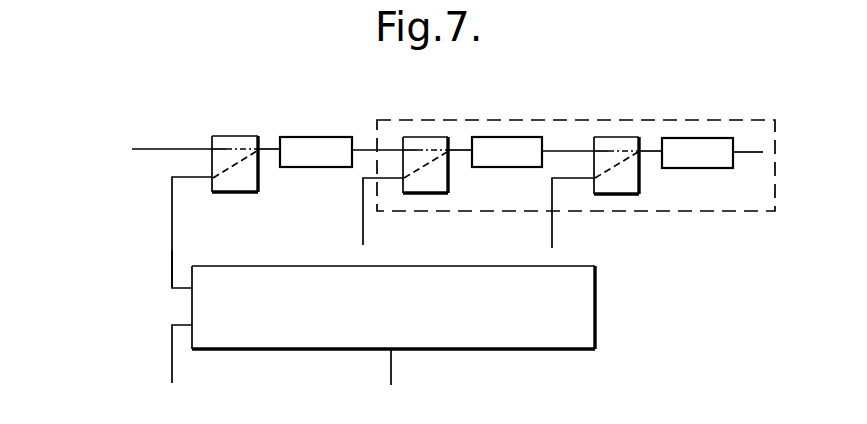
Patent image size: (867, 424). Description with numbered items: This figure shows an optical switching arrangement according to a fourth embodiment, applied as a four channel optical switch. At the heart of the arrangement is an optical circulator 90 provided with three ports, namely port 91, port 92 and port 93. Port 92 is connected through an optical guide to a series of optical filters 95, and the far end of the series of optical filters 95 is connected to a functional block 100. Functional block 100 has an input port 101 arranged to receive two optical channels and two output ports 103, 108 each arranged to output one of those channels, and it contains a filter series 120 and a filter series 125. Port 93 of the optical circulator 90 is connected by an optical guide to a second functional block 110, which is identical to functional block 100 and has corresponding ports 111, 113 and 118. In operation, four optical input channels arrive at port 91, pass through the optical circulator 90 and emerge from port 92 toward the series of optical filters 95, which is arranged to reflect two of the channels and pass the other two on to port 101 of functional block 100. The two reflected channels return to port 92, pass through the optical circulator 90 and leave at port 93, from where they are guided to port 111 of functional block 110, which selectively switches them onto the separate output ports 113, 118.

The optical circulator 90 is at (243, 185).
The port 91 is at (212, 150).
The port 92 is at (258, 149).
The port 93 is at (212, 177).
The series of optical filters 95 is at (300, 147).
The functional block 100 is at (752, 203).
The port 101 is at (377, 157).
The port 103 is at (362, 180).
The port 108 is at (554, 234).
The functional block 110 is at (414, 322).
The port 111 is at (171, 272).
The port 113 is at (171, 355).
The port 118 is at (392, 366).
The filter series 120 is at (508, 147).
The filter series 125 is at (703, 153).